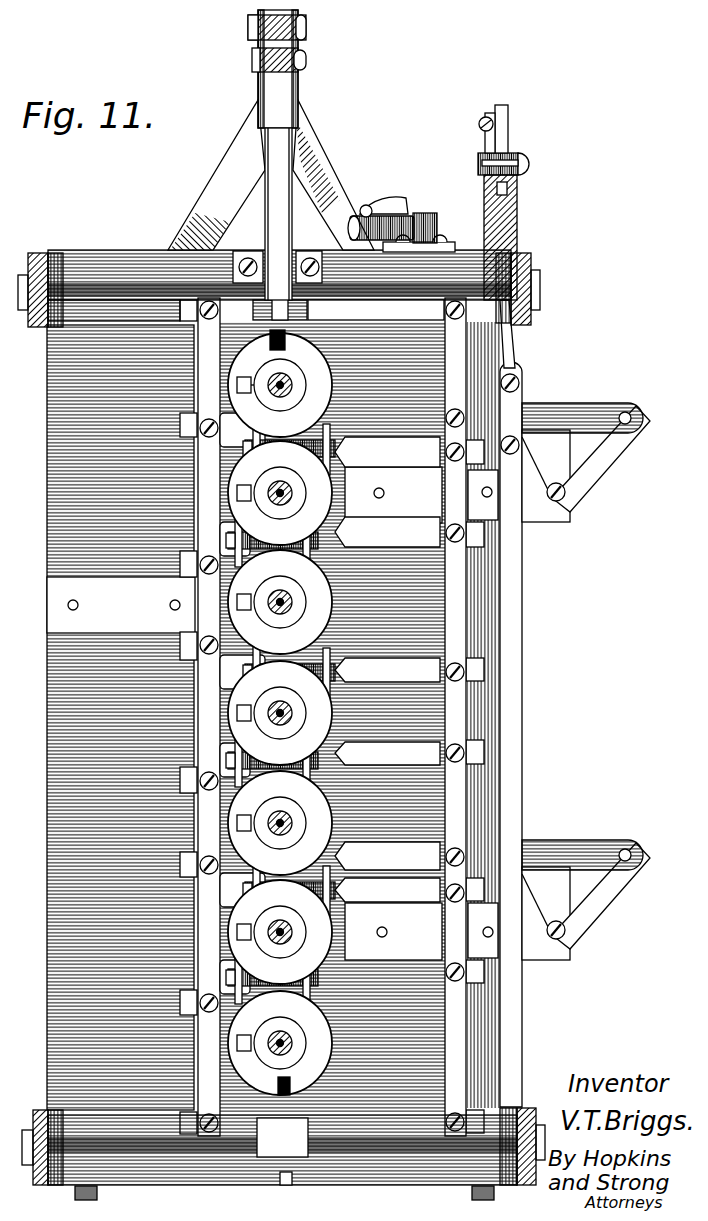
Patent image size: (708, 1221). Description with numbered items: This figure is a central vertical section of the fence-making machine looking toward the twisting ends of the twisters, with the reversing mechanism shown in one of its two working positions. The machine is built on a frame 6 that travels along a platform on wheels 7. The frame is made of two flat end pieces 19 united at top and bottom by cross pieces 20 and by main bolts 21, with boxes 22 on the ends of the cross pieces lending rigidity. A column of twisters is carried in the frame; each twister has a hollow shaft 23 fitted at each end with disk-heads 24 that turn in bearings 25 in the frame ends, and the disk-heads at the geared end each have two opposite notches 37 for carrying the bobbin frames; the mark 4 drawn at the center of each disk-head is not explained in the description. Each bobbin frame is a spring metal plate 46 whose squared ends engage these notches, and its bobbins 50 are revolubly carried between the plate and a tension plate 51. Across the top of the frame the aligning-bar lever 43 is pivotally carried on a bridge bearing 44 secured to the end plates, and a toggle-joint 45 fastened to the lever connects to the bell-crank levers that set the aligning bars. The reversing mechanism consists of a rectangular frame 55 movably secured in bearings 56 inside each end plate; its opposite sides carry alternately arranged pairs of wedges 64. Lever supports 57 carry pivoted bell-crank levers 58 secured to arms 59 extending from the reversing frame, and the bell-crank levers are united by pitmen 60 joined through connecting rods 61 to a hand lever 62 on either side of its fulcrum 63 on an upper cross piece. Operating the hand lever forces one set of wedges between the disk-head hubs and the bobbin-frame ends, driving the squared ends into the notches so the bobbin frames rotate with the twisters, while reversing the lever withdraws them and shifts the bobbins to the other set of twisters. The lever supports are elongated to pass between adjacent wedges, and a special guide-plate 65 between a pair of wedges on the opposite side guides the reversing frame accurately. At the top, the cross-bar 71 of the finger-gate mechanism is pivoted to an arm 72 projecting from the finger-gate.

The shaft 4 is at (292, 385).
The frame 6 is at (46, 729).
The wheels 7 is at (96, 1190).
The end pieces 19 is at (246, 717).
The cross pieces 20 is at (30, 328).
The main bolts 21 is at (150, 290).
The boxes 22 is at (42, 253).
The hollow shaft 23 is at (270, 368).
The disk-heads 24 is at (298, 370).
The bearings 25 is at (332, 389).
The notches 37 is at (288, 341).
The lever 43 is at (298, 32).
The bridge bearing 44 is at (290, 208).
The toggle-joint 45 is at (298, 72).
The spring metal plate 46 is at (332, 450).
The bobbins 50 is at (280, 713).
The tension plate 51 is at (256, 440).
The rectangular frame 55 is at (310, 312).
The bearings 56 is at (380, 318).
The lever supports 57 is at (540, 518).
The bell-crank levers 58 is at (596, 462).
The arms 59 is at (596, 403).
The pitmen 60 is at (505, 608).
The connecting rods 61 is at (509, 362).
The hand lever 62 is at (508, 125).
The fulcrum 63 is at (521, 163).
The wedges 64 is at (180, 425).
The guide-plate 65 is at (244, 713).
The cross-bar 71 is at (400, 206).
The arm 72 is at (421, 218).